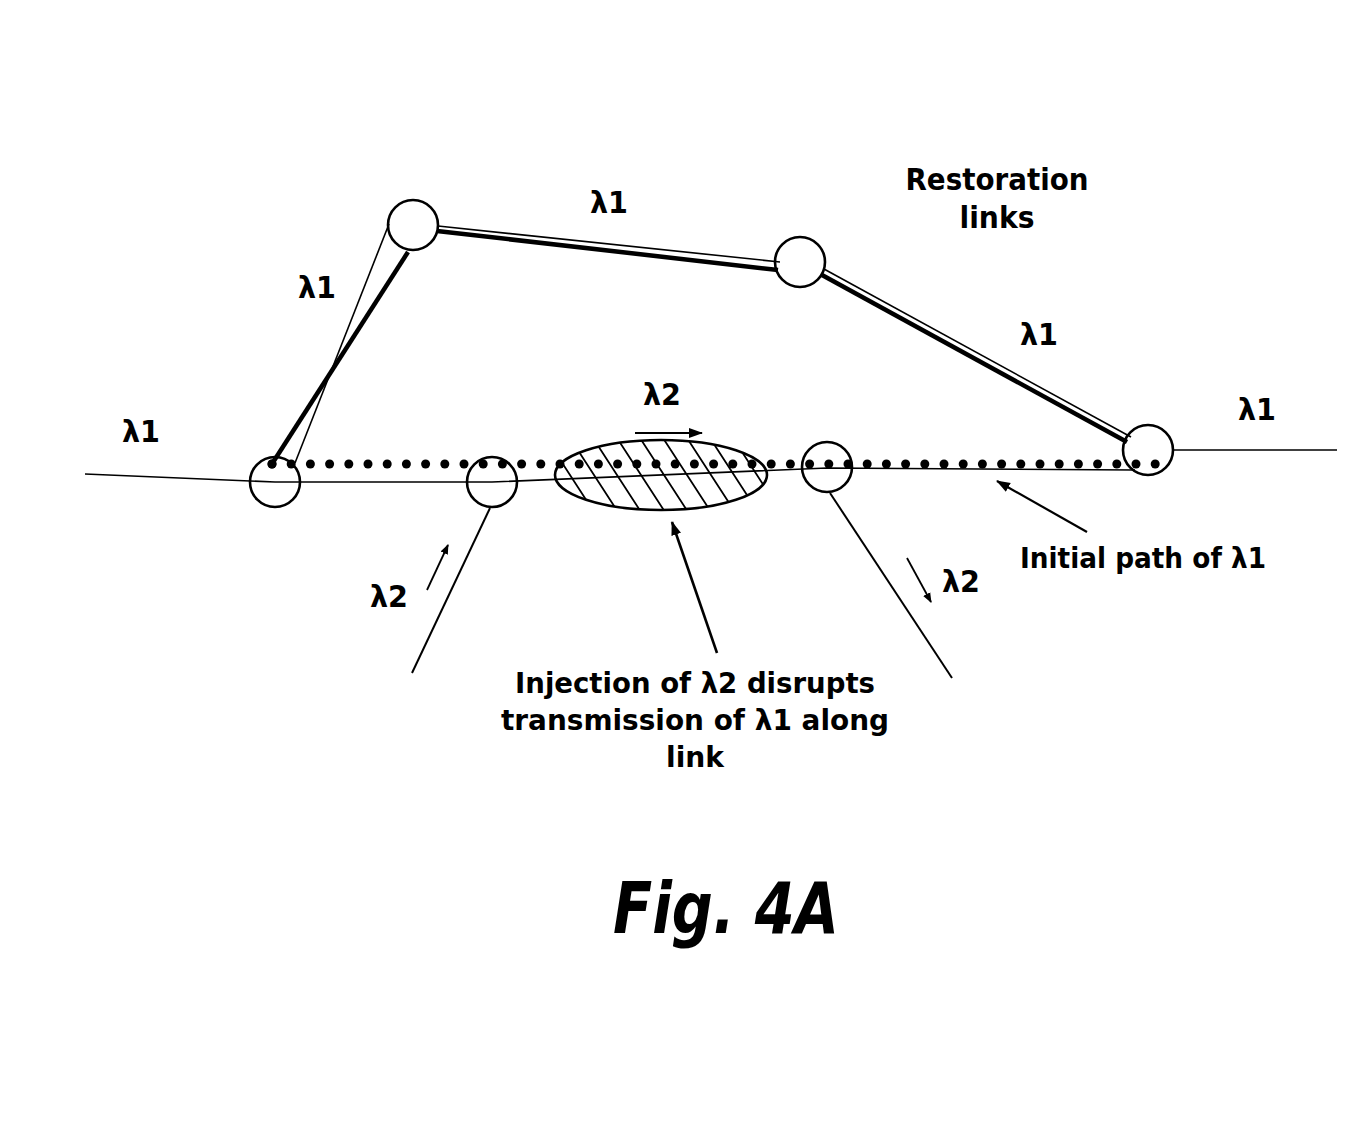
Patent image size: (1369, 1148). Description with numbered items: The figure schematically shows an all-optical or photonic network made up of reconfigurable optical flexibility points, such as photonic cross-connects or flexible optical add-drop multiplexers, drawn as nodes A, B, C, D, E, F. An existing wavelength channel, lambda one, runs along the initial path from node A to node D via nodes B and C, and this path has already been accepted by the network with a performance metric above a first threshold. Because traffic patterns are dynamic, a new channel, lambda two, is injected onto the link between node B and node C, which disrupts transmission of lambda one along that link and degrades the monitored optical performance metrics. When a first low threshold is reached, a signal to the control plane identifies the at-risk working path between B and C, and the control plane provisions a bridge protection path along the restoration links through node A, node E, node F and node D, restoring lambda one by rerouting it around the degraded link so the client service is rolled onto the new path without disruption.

The reconfigurable optical flexibility point A is at (269, 456).
The reconfigurable optical flexibility point B is at (492, 444).
The reconfigurable optical flexibility point C is at (827, 436).
The reconfigurable optical flexibility point D is at (1151, 428).
The reconfigurable optical flexibility point E is at (413, 195).
The reconfigurable optical flexibility point F is at (800, 233).